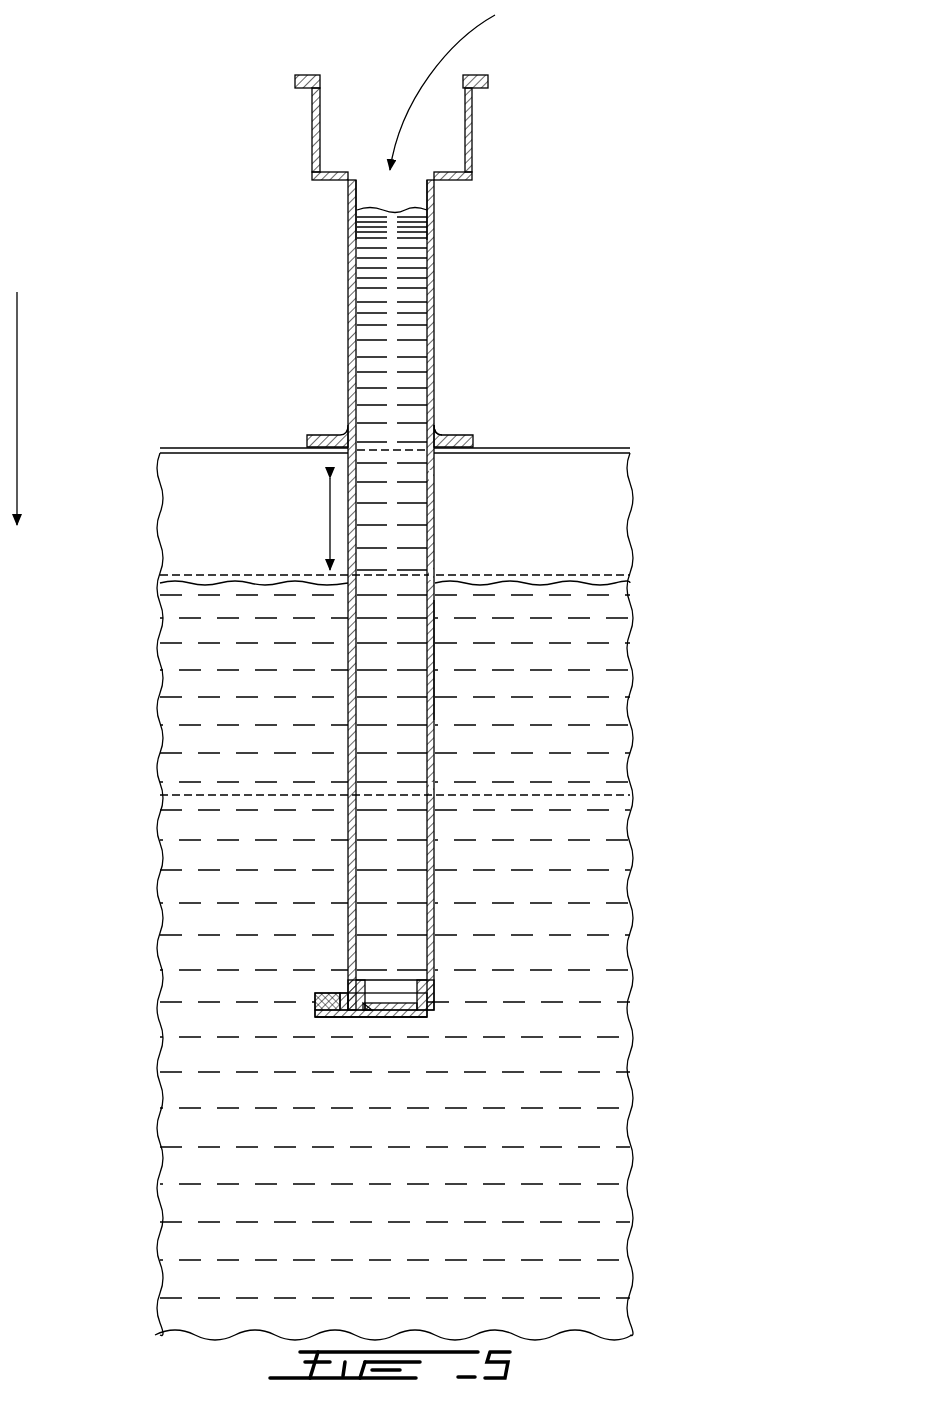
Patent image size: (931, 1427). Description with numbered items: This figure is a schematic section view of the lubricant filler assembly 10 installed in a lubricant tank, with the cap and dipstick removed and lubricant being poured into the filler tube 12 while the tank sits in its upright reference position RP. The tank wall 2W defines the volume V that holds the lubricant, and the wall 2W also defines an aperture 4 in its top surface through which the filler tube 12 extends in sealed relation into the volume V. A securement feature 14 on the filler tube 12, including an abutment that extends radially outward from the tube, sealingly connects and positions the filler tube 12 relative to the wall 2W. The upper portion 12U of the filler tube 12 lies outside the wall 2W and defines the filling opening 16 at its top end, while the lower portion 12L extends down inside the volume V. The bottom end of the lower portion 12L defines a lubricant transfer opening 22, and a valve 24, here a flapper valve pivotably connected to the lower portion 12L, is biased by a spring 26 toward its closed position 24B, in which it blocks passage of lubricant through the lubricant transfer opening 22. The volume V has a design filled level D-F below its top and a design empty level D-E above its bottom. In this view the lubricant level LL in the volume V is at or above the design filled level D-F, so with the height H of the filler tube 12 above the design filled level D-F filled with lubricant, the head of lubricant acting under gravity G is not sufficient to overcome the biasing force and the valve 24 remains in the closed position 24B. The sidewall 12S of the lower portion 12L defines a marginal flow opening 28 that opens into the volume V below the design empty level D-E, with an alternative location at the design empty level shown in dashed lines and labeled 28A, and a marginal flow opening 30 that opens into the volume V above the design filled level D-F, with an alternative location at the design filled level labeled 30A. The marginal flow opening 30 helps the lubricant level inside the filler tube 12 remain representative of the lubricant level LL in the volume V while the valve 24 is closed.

The lubricant filler assembly 10 is at (592, 93).
The upright reference position RP is at (678, 140).
The filling opening 16 is at (335, 62).
The filler tube 12 is at (348, 238).
The upper portion 12U is at (441, 225).
The sidewall 12S is at (440, 660).
The lower portion 12L is at (340, 937).
The securement feature 14 is at (318, 435).
The aperture 4 is at (430, 420).
The wall 2W is at (585, 448).
The volume V is at (198, 494).
The gravity G is at (17, 397).
The height H is at (330, 525).
The marginal flow opening 30 is at (432, 478).
The marginal flow opening alternative location 30A is at (432, 575).
The lubricant level LL is at (585, 583).
The design filled level D-F is at (140, 575).
The design empty level D-E is at (140, 795).
The marginal flow opening 28 is at (432, 957).
The marginal flow opening alternative location 28A is at (433, 780).
The spring 26 is at (320, 1000).
The lubricant transfer opening 22 is at (412, 996).
The valve 24 is at (385, 1017).
The closed position 24B is at (345, 1017).